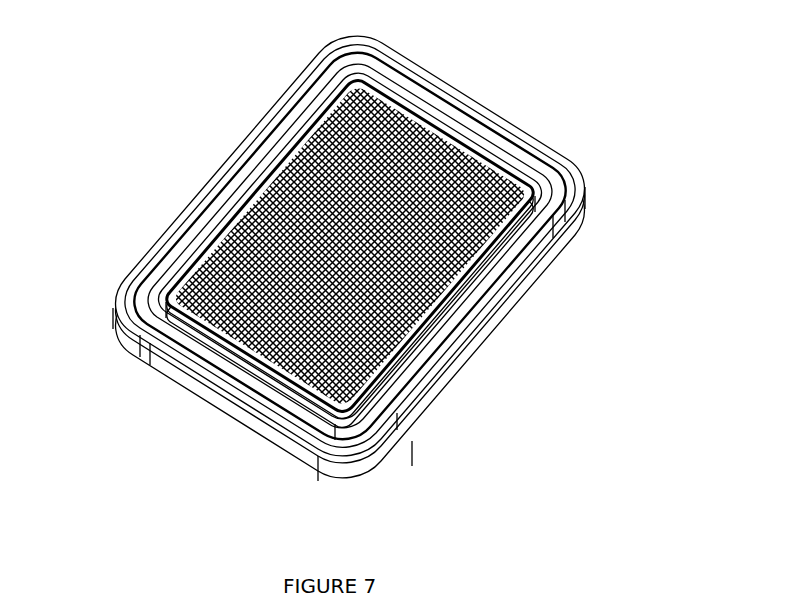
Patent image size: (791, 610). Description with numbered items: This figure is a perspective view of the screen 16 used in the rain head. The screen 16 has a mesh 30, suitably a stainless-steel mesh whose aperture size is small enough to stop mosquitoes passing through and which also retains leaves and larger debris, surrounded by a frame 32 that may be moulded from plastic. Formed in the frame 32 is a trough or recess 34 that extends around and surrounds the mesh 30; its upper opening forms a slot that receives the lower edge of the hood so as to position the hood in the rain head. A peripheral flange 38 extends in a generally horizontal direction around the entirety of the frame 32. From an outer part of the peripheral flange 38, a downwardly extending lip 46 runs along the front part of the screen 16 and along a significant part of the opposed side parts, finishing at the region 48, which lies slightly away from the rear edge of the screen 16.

The screen 16 is at (195, 78).
The mesh 30 is at (445, 140).
The frame 32 is at (232, 168).
The trough or recess 34 is at (135, 300).
The peripheral flange 38 is at (572, 212).
The downwardly extending lip 46 is at (505, 347).
The region where the downwardly extending lip finishes 48 is at (563, 263).